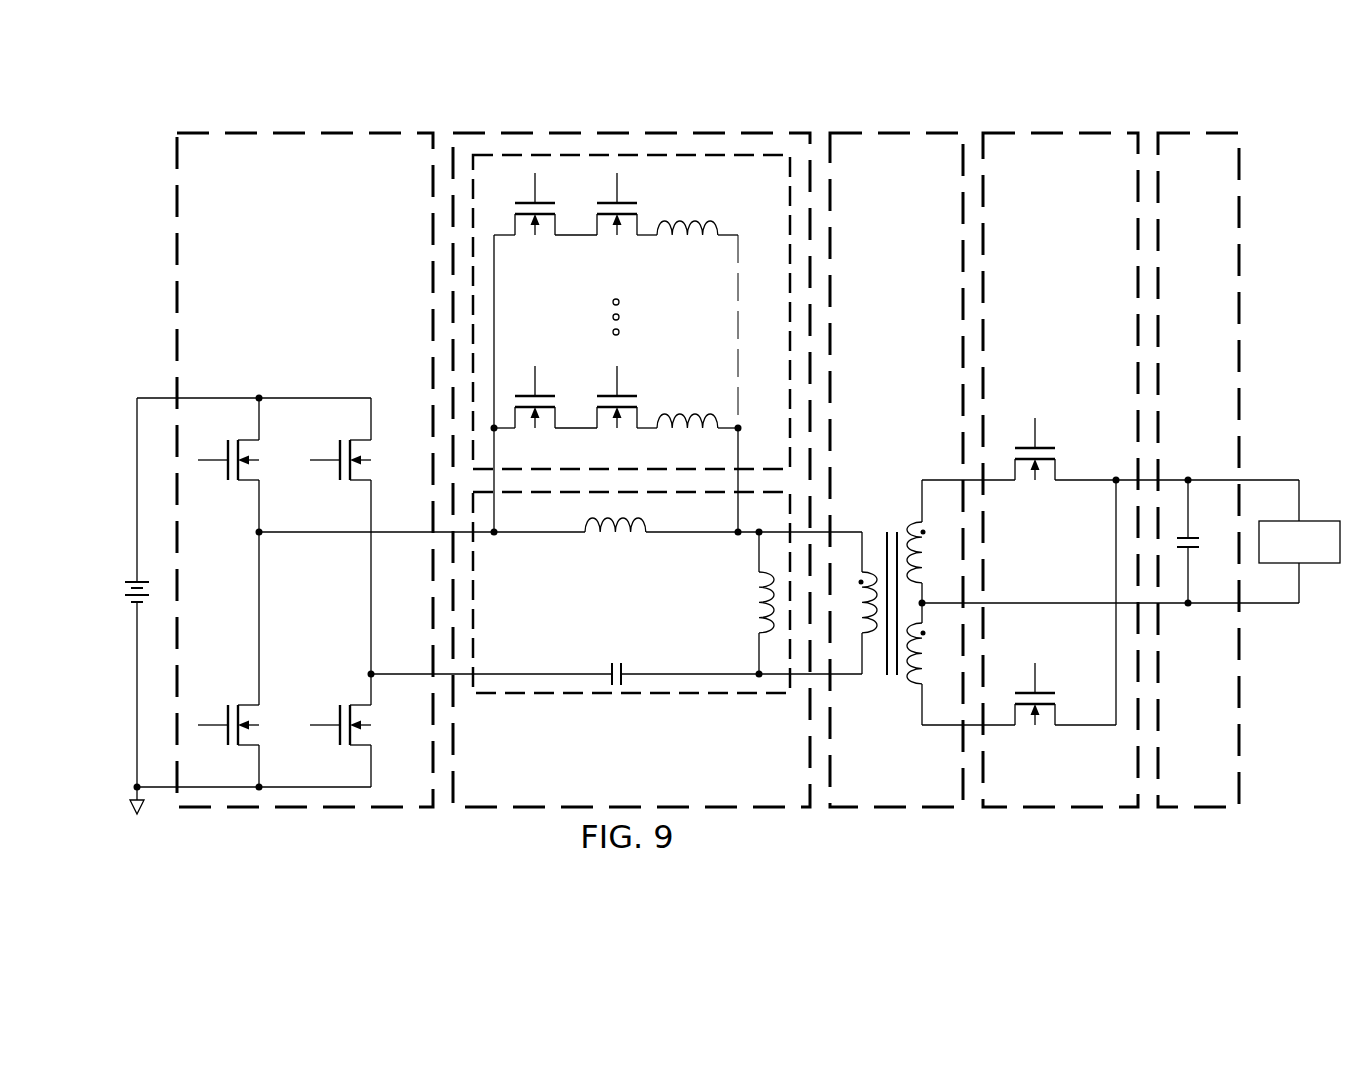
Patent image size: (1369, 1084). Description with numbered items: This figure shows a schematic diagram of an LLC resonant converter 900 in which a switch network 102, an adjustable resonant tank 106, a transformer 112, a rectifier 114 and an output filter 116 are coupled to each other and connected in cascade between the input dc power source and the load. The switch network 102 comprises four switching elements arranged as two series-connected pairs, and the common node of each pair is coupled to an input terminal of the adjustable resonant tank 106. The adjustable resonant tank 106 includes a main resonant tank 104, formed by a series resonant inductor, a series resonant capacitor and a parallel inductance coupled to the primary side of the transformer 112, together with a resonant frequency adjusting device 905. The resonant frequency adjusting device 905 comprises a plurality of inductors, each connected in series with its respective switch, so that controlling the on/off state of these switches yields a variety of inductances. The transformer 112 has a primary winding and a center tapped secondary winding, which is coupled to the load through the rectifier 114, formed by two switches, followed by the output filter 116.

The LLC resonant converter 900 is at (386, 64).
The switch network 102 is at (227, 125).
The main resonant tank 104 is at (588, 700).
The adjustable resonant tank 106 is at (508, 125).
The resonant frequency adjusting device 905 is at (719, 198).
The transformer 112 is at (954, 125).
The rectifier 114 is at (1090, 125).
The output filter 116 is at (1228, 125).